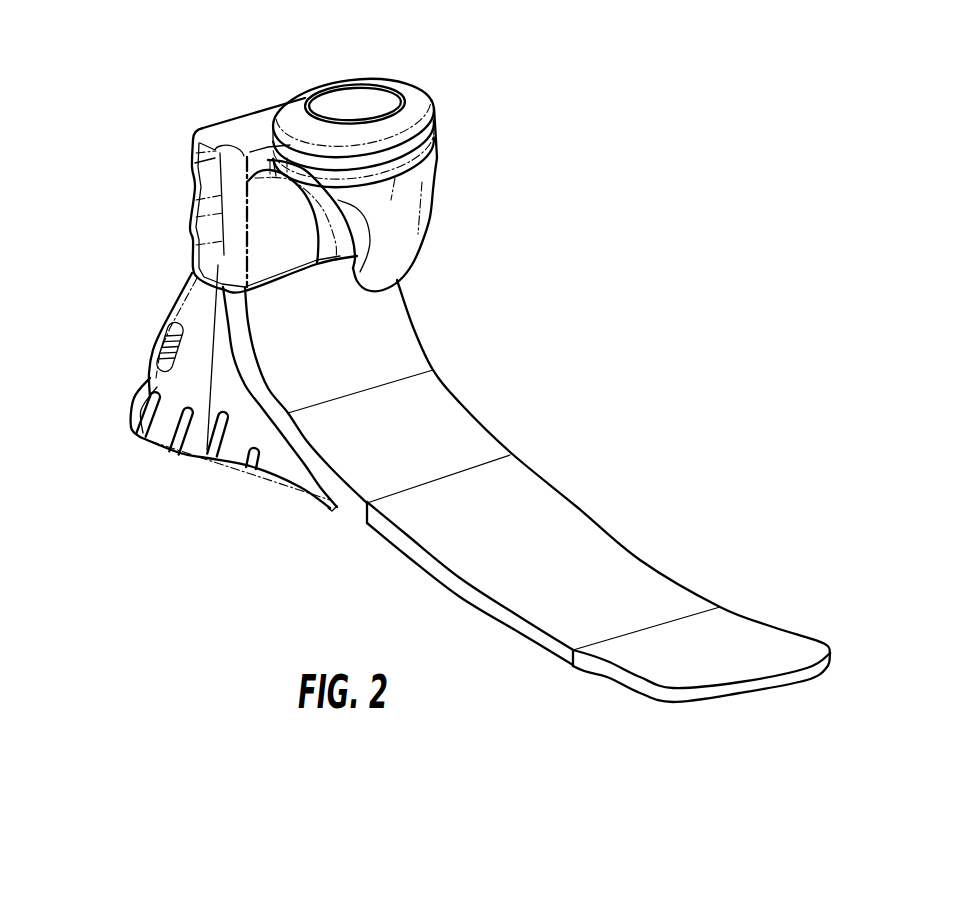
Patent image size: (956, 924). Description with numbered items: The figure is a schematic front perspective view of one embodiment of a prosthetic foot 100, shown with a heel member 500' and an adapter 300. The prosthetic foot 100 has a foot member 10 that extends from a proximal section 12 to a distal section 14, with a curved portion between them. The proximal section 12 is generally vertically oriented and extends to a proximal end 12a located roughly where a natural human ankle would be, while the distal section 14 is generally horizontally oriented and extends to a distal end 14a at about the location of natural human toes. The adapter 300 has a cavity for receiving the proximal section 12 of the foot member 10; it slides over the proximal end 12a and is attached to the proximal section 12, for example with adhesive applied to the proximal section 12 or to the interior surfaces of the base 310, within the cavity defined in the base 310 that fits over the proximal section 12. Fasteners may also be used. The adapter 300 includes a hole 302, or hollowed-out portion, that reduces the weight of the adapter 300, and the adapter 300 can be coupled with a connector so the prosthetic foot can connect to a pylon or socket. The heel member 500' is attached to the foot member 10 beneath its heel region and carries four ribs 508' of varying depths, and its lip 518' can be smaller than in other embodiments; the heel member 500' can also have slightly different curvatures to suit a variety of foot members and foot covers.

The prosthetic foot 100 is at (619, 242).
The foot member 10 is at (579, 503).
The proximal section 12 is at (180, 205).
The proximal end 12a is at (236, 102).
The distal section 14 is at (785, 620).
The distal end 14a is at (807, 690).
The adapter 300 is at (447, 163).
The hole 302 is at (362, 220).
The base 310 is at (236, 191).
The heel member 500' is at (199, 436).
The ribs 508' is at (190, 499).
The lip 518' is at (109, 379).